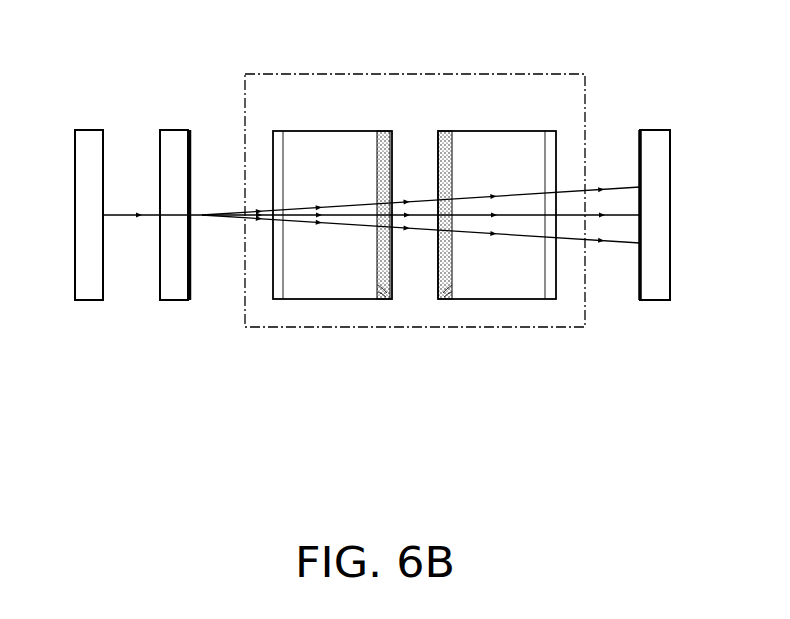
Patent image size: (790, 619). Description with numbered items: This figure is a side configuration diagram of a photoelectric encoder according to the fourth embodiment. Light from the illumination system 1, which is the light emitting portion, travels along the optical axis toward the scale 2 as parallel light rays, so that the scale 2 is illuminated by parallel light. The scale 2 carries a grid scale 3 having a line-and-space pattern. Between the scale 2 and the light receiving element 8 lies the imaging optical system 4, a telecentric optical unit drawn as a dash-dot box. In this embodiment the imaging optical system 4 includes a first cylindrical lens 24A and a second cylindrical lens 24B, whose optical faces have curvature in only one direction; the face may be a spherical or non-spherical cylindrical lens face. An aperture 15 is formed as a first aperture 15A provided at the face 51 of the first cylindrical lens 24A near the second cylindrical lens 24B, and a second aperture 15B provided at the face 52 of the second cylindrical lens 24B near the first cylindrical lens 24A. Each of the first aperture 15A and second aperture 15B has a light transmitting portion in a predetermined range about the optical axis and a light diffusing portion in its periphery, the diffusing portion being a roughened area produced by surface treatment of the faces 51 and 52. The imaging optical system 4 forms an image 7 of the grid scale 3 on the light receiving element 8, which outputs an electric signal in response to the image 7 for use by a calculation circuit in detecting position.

The illumination system 1 is at (75, 130).
The scale 2 is at (160, 130).
The grid scale 3 is at (191, 145).
The imaging optical system 4 is at (272, 74).
The first cylindrical lens 24A is at (343, 147).
The second cylindrical lens 24B is at (508, 145).
The aperture 15 is at (414, 292).
The first aperture 15A is at (386, 271).
The second aperture 15B is at (443, 271).
The face 51 is at (380, 296).
The face 52 is at (450, 296).
The image 7 is at (640, 145).
The light receiving element 8 is at (670, 130).